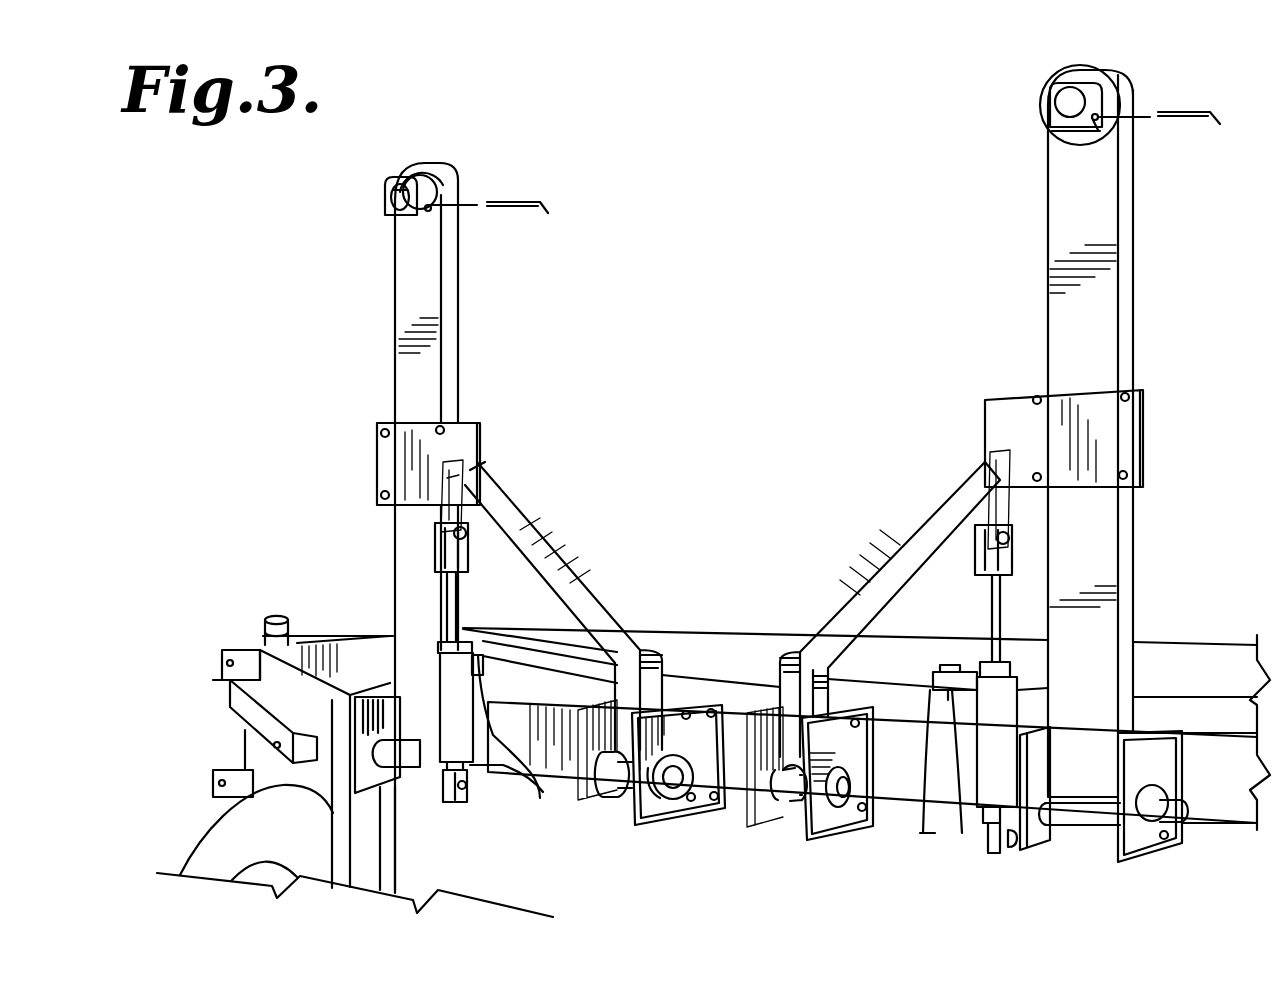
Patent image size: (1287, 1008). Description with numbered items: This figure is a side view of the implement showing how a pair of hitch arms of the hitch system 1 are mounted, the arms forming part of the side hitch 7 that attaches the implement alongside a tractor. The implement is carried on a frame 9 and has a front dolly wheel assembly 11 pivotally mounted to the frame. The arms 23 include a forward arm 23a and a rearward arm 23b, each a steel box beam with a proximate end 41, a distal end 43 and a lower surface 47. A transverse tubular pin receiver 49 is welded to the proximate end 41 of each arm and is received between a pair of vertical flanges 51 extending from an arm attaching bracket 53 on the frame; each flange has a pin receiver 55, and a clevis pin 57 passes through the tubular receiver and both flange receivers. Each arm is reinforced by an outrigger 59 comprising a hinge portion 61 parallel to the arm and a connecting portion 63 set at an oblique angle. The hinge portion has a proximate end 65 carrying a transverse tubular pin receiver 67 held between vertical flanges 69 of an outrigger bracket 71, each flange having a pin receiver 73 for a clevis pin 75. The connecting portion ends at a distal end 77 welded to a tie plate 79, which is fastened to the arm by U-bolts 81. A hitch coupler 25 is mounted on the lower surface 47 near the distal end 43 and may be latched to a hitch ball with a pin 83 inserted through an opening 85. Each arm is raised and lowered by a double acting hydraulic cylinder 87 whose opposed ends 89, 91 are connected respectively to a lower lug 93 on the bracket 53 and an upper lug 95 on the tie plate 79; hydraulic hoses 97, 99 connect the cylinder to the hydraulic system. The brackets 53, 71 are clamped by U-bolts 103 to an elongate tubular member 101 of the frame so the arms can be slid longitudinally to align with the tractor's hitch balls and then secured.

The hitch system 1 is at (372, 218).
The side hitch 7 is at (1138, 178).
The frame 9 is at (300, 648).
The front dolly wheel assembly 11 is at (200, 848).
The arms 23 is at (801, 481).
The forward arm 23a is at (458, 290).
The rearward arm 23b is at (1133, 228).
The hitch coupler 25 is at (390, 182).
The proximate end 41 is at (1065, 825).
The distal end 43 is at (440, 170).
The lower surface 47 is at (424, 384).
The transverse tubular pin receiver 49 is at (393, 800).
The vertical flange 51 is at (357, 772).
The arm attaching bracket 53 is at (364, 698).
The pin receiver 55 is at (1158, 790).
The clevis pin 57 is at (1200, 812).
The outrigger 59 is at (520, 572).
The hinge portion 61 is at (652, 660).
The connecting portion 63 is at (562, 527).
The proximate end 65 is at (600, 775).
The transverse tubular pin receiver 67 is at (612, 800).
The vertical flange 69 is at (566, 812).
The outrigger bracket 71 is at (697, 705).
The pin receiver 73 is at (675, 780).
The clevis pin 75 is at (682, 780).
The distal end 77 is at (480, 462).
The tie plate 79 is at (467, 423).
The U-bolt 81 is at (376, 494).
The pin 83 is at (520, 200).
The opening 85 is at (428, 212).
The double acting hydraulic cylinder 87 is at (440, 672).
The end 89 is at (432, 545).
The end 91 is at (478, 792).
The lower lug 93 is at (460, 805).
The upper lug 95 is at (460, 480).
The hydraulic hose 97 is at (472, 716).
The hydraulic hose 99 is at (540, 772).
The elongate tubular member 101 is at (1236, 720).
The U-bolt 103 is at (692, 803).